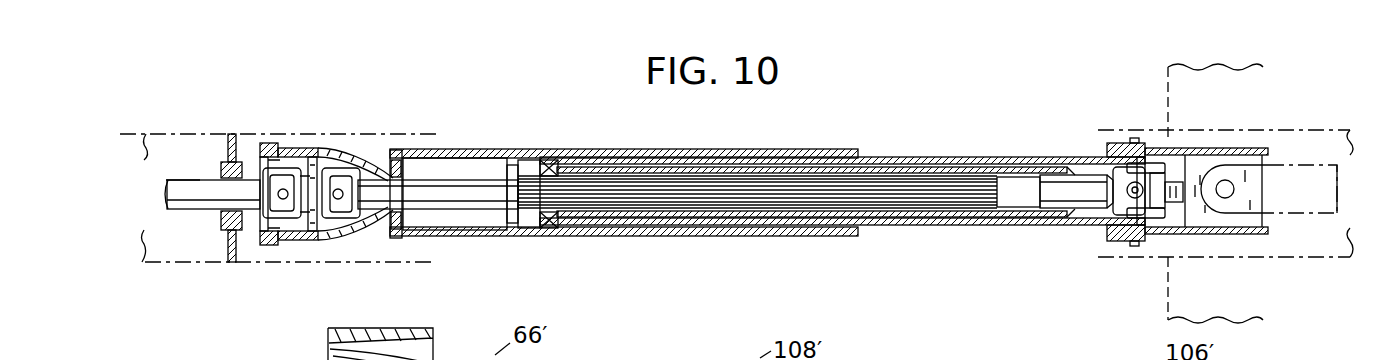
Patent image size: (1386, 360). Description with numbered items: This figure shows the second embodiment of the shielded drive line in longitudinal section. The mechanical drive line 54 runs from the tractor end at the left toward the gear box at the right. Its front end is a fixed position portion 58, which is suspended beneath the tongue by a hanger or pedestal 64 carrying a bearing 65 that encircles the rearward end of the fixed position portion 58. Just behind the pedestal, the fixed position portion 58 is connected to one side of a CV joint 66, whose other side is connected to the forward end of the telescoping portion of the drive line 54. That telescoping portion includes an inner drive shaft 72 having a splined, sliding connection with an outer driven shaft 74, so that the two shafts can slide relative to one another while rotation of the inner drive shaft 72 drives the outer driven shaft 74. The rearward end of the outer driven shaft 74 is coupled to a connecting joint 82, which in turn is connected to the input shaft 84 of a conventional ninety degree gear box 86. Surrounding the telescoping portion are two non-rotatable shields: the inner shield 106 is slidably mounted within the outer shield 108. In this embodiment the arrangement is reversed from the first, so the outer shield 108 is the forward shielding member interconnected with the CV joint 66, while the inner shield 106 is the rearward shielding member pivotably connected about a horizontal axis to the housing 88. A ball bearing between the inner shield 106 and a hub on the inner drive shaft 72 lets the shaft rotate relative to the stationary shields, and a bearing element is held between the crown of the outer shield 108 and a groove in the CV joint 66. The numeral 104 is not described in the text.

The mechanical drive line 54 is at (161, 175).
The fixed position portion 58 is at (198, 200).
The hanger or pedestal 64 is at (233, 135).
The bearing 65 is at (221, 168).
The CV joint 66 is at (309, 150).
The inner drive shaft 72 is at (483, 192).
The outer driven shaft 74 is at (1030, 167).
The connecting joint 82 is at (1163, 212).
The input shaft 84 is at (1175, 184).
The gear box 86 is at (1246, 218).
The housing 88 is at (1238, 148).
The outer tube 104 is at (779, 149).
The inner shield 106 is at (948, 157).
The outer shield 108 is at (455, 149).